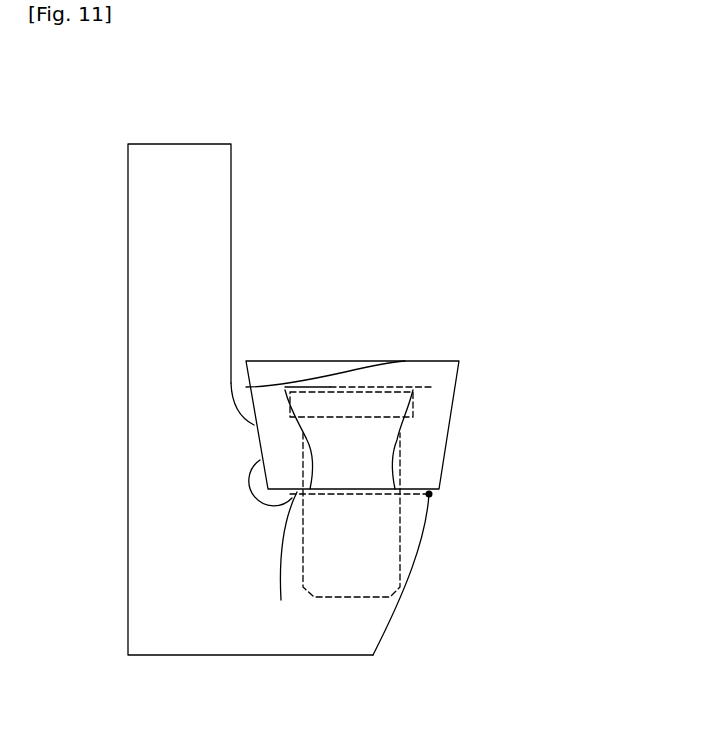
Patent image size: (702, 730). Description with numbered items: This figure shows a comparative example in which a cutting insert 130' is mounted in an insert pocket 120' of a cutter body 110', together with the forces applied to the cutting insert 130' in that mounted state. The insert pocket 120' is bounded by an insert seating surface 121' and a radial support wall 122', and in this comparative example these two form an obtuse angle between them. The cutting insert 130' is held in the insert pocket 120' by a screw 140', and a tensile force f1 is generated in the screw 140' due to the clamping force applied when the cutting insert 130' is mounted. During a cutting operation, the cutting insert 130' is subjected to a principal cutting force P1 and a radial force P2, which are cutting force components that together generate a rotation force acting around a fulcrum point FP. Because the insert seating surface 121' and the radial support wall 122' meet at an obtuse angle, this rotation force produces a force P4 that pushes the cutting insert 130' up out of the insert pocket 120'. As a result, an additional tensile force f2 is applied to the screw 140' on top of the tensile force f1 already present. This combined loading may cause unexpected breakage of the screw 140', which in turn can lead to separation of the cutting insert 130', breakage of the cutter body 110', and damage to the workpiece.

The cutter body 110' is at (250, 358).
The insert pocket 120' is at (305, 498).
The insert seating surface 121' is at (339, 599).
The radial support wall 122' is at (175, 444).
The cutting insert 130' is at (352, 387).
The screw 140' is at (361, 549).
The fulcrum point FP is at (429, 494).
The principal cutting force P1 is at (465, 302).
The radial force P2 is at (516, 360).
The force pushing up the cutting insert P4 is at (263, 412).
The tensile force f1 is at (327, 409).
The additional tensile force f2 is at (351, 357).